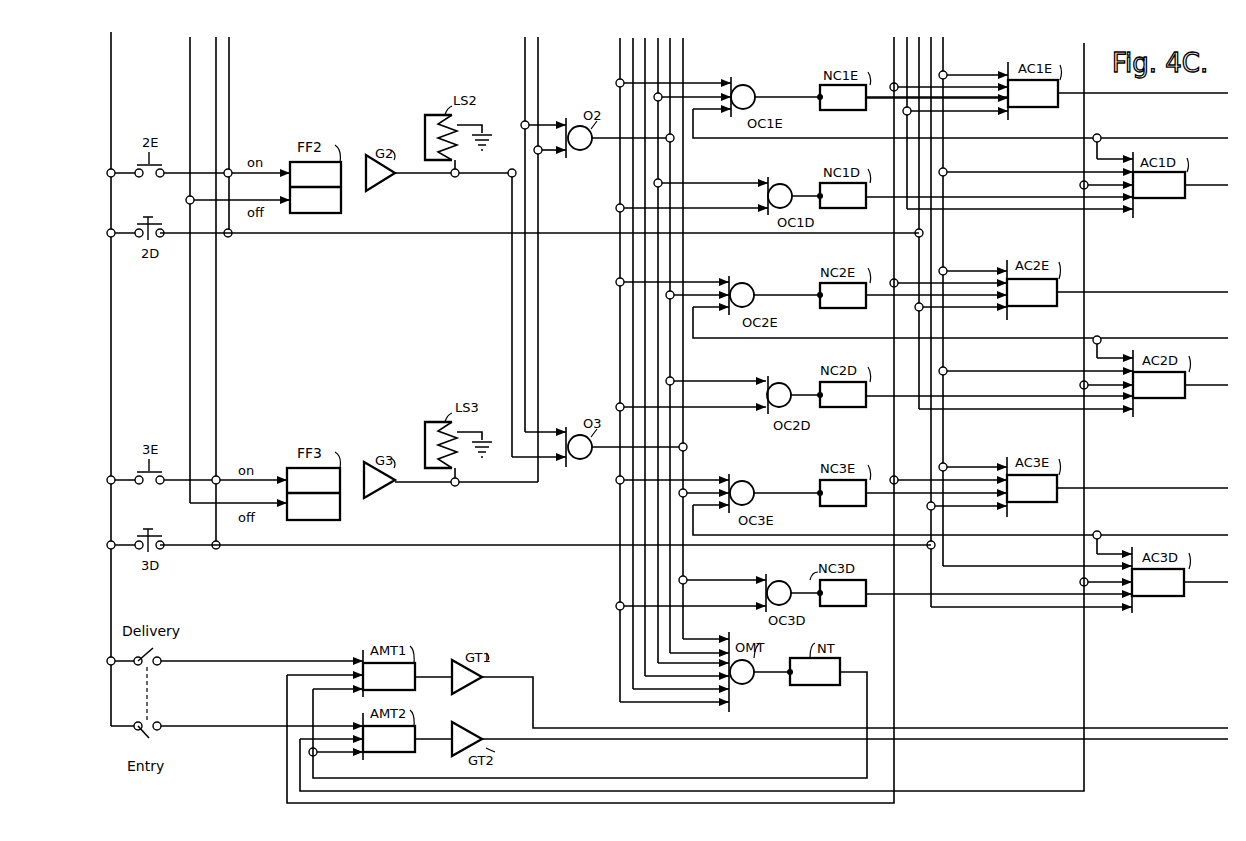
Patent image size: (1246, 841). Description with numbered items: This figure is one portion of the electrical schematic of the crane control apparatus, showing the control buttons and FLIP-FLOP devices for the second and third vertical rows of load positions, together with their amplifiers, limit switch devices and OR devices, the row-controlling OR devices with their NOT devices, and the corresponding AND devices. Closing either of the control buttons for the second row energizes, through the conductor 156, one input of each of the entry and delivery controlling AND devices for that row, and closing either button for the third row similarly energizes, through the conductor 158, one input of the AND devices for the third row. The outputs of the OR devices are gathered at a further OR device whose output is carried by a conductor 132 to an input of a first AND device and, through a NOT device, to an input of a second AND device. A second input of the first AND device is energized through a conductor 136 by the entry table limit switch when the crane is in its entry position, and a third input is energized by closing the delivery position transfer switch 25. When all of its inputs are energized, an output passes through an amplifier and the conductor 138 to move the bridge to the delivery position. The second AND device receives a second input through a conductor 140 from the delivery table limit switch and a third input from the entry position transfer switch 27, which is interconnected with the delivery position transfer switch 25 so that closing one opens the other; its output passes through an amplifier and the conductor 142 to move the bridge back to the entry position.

The delivery position transfer switch 25 is at (152, 651).
The entry position transfer switch 27 is at (147, 732).
The conductor 132 is at (800, 778).
The conductor 136 is at (287, 760).
The conductor 138 is at (525, 675).
The conductor 140 is at (1084, 781).
The conductor 142 is at (709, 741).
The conductor 156 is at (407, 236).
The conductor 158 is at (461, 548).